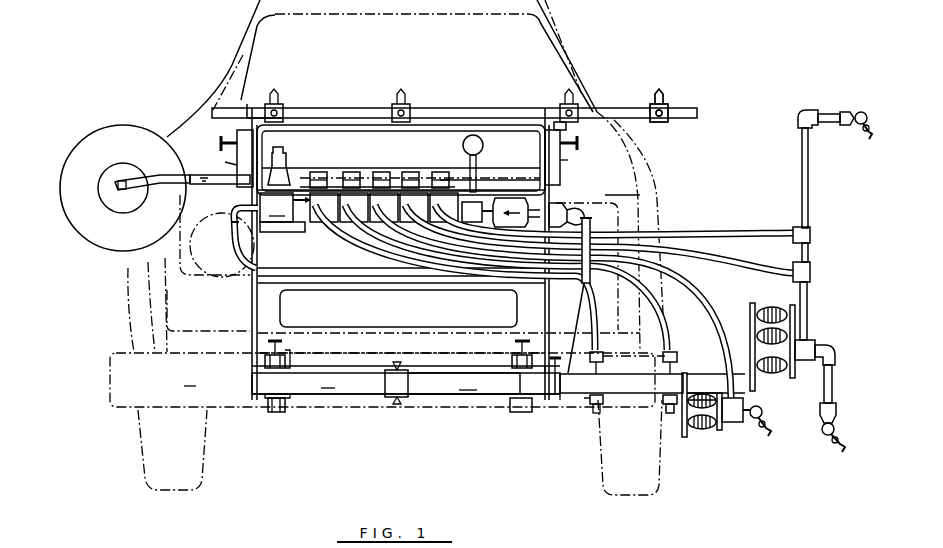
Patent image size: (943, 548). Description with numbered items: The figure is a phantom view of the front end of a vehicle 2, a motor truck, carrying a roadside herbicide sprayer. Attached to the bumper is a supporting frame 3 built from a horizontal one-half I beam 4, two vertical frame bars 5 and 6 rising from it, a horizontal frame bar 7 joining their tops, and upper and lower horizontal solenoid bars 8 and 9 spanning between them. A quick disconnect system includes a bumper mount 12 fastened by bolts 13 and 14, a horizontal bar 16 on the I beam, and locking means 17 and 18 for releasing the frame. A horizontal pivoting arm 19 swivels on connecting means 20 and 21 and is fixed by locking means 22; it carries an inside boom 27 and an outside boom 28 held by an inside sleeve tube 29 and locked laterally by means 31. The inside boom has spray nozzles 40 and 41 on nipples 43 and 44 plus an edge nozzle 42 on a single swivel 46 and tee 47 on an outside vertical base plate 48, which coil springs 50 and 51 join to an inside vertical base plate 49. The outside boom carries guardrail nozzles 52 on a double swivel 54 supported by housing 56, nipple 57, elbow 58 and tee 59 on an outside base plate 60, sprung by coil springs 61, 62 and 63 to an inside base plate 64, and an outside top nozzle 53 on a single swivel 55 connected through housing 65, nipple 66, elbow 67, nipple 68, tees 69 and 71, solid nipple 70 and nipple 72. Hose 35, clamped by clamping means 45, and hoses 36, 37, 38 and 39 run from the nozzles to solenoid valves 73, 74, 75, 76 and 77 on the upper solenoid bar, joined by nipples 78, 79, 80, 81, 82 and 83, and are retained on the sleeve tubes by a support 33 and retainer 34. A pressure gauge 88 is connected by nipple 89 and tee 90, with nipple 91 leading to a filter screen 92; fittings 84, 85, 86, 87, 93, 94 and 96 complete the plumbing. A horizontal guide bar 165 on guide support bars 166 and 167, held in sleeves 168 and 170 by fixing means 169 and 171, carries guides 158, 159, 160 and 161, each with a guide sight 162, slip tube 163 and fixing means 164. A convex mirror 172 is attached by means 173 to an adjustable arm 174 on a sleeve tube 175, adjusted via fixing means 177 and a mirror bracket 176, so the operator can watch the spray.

The vehicle 2 is at (128, 272).
The supporting frame 3 is at (357, 394).
The horizontal one-half I beam 4 is at (406, 380).
The vertical frame bar 5 is at (252, 300).
The vertical frame bar 6 is at (545, 302).
The horizontal frame bar 7 is at (418, 125).
The upper horizontal solenoid bar 8 is at (290, 168).
The lower horizontal solenoid bar 9 is at (412, 283).
The right bumper mount 12 is at (265, 357).
The bolt 13 is at (288, 355).
The bolt 14 is at (276, 412).
The horizontal bar 16 is at (266, 398).
The locking means 17 is at (522, 340).
The locking means 18 is at (274, 340).
The horizontal pivoting arm 19 is at (464, 383).
The connecting means 20 is at (397, 362).
The connecting means 21 is at (397, 405).
The locking means 22 is at (512, 357).
The inside boom 27 is at (616, 380).
The outside boom 28 is at (678, 356).
The inside sleeve tube 29 is at (562, 395).
The locking means 31 is at (554, 357).
The support 33 is at (580, 303).
The retainer 34 is at (590, 225).
The hose 35 is at (591, 320).
The hose 36 is at (655, 318).
The hose 37 is at (712, 298).
The hose 38 is at (752, 259).
The hose 39 is at (735, 229).
The spray nozzle 40 is at (598, 410).
The spray nozzle 41 is at (666, 410).
The edge nozzle 42 is at (769, 430).
The nipple 43 is at (590, 398).
The nipple 44 is at (662, 398).
The clamping means 45 is at (603, 354).
The single swivel 46 is at (762, 412).
The tee 47 is at (738, 422).
The outside vertical base plate 48 is at (720, 431).
The inside vertical base plate 49 is at (684, 438).
The coil spring 50 is at (700, 430).
The coil spring 51 is at (696, 394).
The guardrail nozzles 52 is at (841, 447).
The outside top nozzle 53 is at (868, 138).
The double swivel 54 is at (822, 429).
The single swivel 55 is at (862, 111).
The housing 56 is at (836, 410).
The nipple 57 is at (832, 384).
The elbow 58 is at (835, 350).
The tee 59 is at (815, 342).
The outside base plate 60 is at (792, 378).
The coil spring 61 is at (770, 374).
The coil spring 62 is at (757, 328).
The coil spring 63 is at (773, 307).
The inside base plate 64 is at (752, 308).
The housing 65 is at (846, 126).
The nipple 66 is at (826, 113).
The elbow 67 is at (798, 115).
The nipple 68 is at (802, 147).
The tee 69 is at (812, 232).
The solid nipple 70 is at (809, 252).
The tee 71 is at (811, 272).
The nipple 72 is at (808, 300).
The solenoid valve 73 is at (424, 205).
The solenoid valve 74 is at (408, 172).
The solenoid valve 75 is at (379, 172).
The solenoid valve 76 is at (349, 172).
The solenoid valve 77 is at (318, 172).
The nipple 78 is at (443, 172).
The nipple 79 is at (416, 186).
The nipple 80 is at (393, 205).
The nipple 81 is at (362, 205).
The nipple 82 is at (330, 205).
The nipple 83 is at (303, 232).
The pump housing 84 is at (285, 207).
The valve 85 is at (273, 190).
The elbow 86 is at (232, 225).
The hose 87 is at (236, 258).
The pressure gauge 88 is at (472, 134).
The nipple 89 is at (463, 145).
The tee 90 is at (474, 202).
The nipple 91 is at (507, 198).
The filter screen 92 is at (518, 198).
The fitting 93 is at (540, 196).
The elbow 94 is at (567, 212).
The flow direction 96 is at (604, 196).
The guide 158 is at (278, 98).
The guide 159 is at (401, 98).
The guide 160 is at (560, 102).
The guide 161 is at (658, 98).
The guide sight 162 is at (668, 100).
The slip tube 163 is at (668, 120).
The fixing means 164 is at (659, 122).
The horizontal guide bar 165 is at (345, 108).
The guide support bar 166 is at (234, 133).
The guide support bar 167 is at (566, 126).
The sleeve 168 is at (264, 110).
The fixing means 169 is at (219, 143).
The sleeve 170 is at (568, 160).
The fixing means 171 is at (579, 144).
The convex mirror 172 is at (70, 160).
The attaching means 173 is at (105, 190).
The adjustable arm 174 is at (150, 176).
The sleeve tube 175 is at (200, 203).
The mirror bracket 176 is at (238, 168).
The fixing means 177 is at (223, 163).